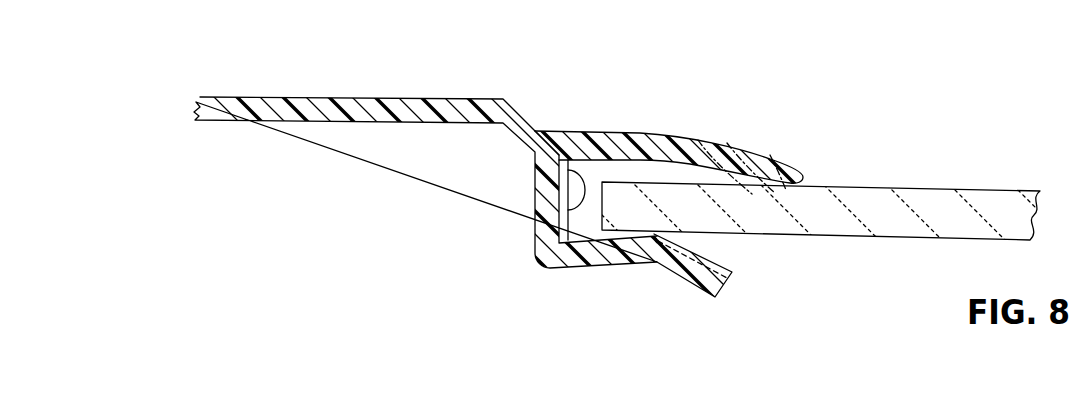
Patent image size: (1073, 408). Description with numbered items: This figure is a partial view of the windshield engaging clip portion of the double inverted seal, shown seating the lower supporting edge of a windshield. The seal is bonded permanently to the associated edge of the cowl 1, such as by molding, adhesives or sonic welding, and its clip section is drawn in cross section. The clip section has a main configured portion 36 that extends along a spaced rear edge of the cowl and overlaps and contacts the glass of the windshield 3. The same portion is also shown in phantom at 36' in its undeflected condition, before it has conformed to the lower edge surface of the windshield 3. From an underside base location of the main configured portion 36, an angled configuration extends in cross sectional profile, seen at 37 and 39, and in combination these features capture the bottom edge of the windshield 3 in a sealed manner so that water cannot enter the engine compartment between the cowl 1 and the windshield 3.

The cowl 1 is at (328, 111).
The windshield 3 is at (934, 204).
The main configured portion 36 is at (688, 118).
The main configured portion in undeflected position 36' is at (746, 144).
The angled configuration 37 is at (578, 200).
The angled configuration 39 is at (653, 243).